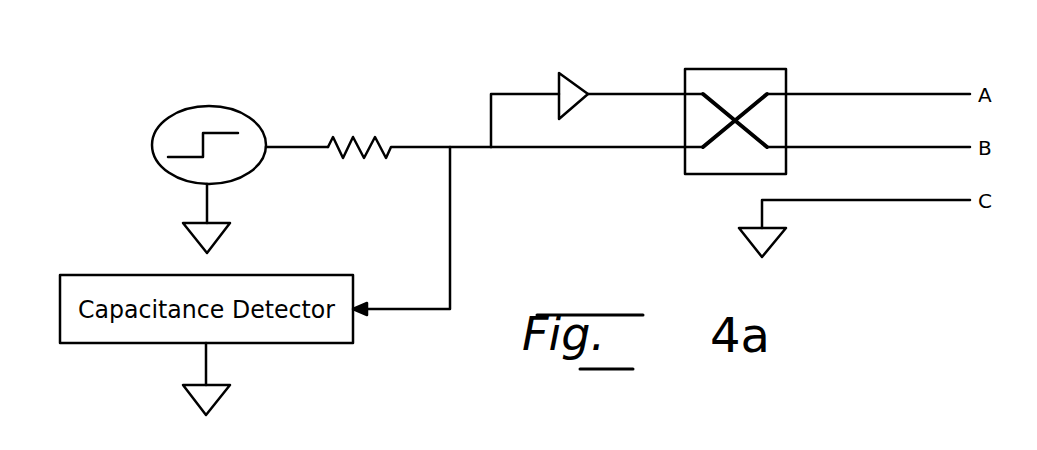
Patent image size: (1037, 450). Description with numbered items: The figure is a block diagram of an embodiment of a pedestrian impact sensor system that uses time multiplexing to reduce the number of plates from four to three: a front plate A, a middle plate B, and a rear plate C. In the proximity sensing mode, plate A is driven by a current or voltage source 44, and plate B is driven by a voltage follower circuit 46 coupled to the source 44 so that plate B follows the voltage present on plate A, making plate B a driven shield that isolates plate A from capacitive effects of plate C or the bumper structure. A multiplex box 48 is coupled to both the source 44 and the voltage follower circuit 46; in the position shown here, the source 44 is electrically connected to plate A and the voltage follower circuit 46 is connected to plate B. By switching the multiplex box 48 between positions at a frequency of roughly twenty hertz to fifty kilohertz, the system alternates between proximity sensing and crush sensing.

The current or voltage source 44 is at (152, 135).
The voltage follower circuit 46 is at (559, 74).
The multiplex box 48 is at (787, 70).